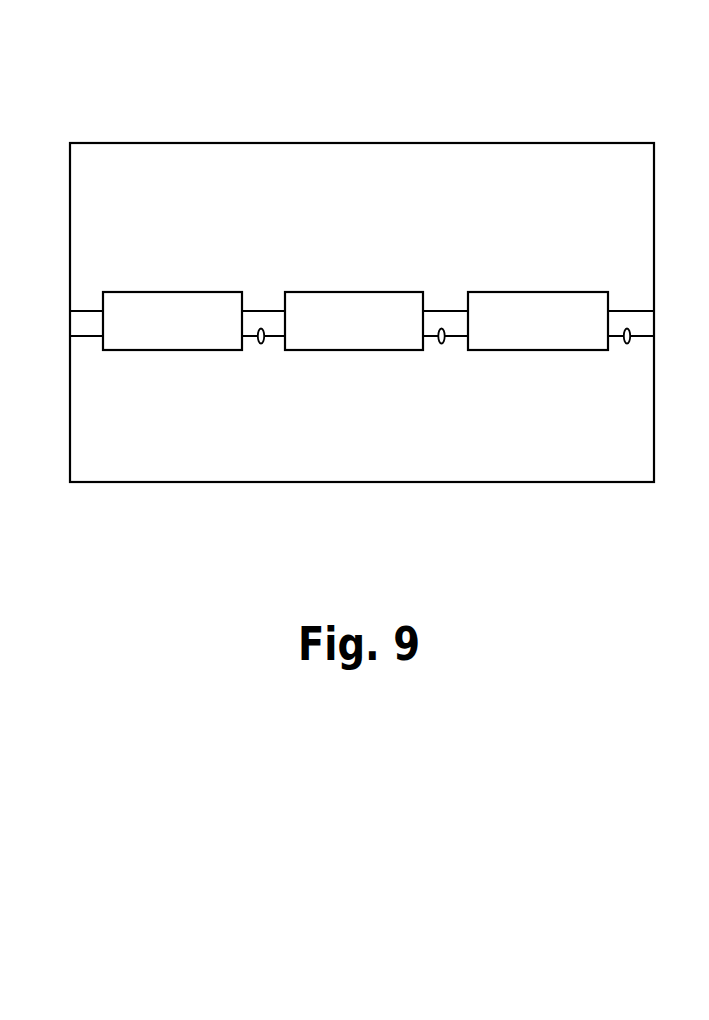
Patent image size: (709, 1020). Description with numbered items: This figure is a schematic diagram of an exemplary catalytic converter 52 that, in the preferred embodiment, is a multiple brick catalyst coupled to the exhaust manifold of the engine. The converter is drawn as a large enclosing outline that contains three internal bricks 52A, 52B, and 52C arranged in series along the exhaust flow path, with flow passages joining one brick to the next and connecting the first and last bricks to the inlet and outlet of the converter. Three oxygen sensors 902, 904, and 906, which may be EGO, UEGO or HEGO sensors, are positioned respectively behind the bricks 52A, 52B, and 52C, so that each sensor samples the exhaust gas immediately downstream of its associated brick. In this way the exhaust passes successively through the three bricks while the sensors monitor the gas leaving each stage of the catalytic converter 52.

The catalytic converter 52 is at (531, 137).
The first brick 52A is at (210, 292).
The second brick 52B is at (350, 292).
The third brick 52C is at (528, 292).
The oxygen sensor 902 is at (259, 345).
The oxygen sensor 904 is at (439, 344).
The oxygen sensor 906 is at (624, 344).